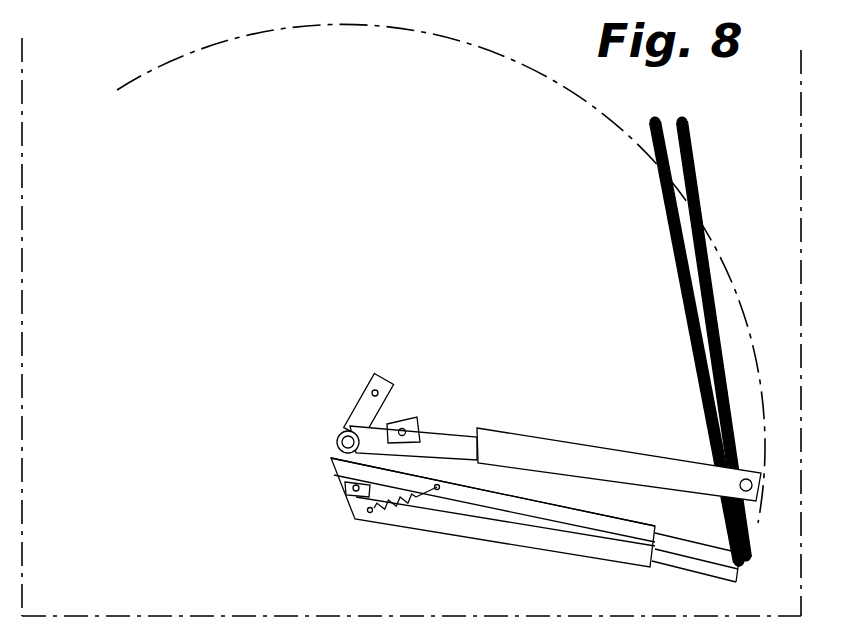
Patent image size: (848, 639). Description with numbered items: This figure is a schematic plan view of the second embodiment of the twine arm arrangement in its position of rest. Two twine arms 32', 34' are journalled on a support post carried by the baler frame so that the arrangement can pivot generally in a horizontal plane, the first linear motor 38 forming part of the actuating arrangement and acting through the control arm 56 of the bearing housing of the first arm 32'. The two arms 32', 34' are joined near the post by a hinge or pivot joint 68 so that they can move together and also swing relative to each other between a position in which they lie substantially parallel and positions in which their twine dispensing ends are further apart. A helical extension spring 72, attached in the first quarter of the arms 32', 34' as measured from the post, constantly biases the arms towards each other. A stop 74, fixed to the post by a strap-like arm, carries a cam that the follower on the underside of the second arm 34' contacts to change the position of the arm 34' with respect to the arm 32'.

The stop 74 is at (388, 362).
The control arm 56 is at (400, 418).
The first linear motor 38 is at (533, 450).
The twine arm 32' is at (493, 500).
The twine arm 34' is at (535, 523).
The hinge or pivot joint 68 is at (348, 487).
The spring 72 is at (416, 506).